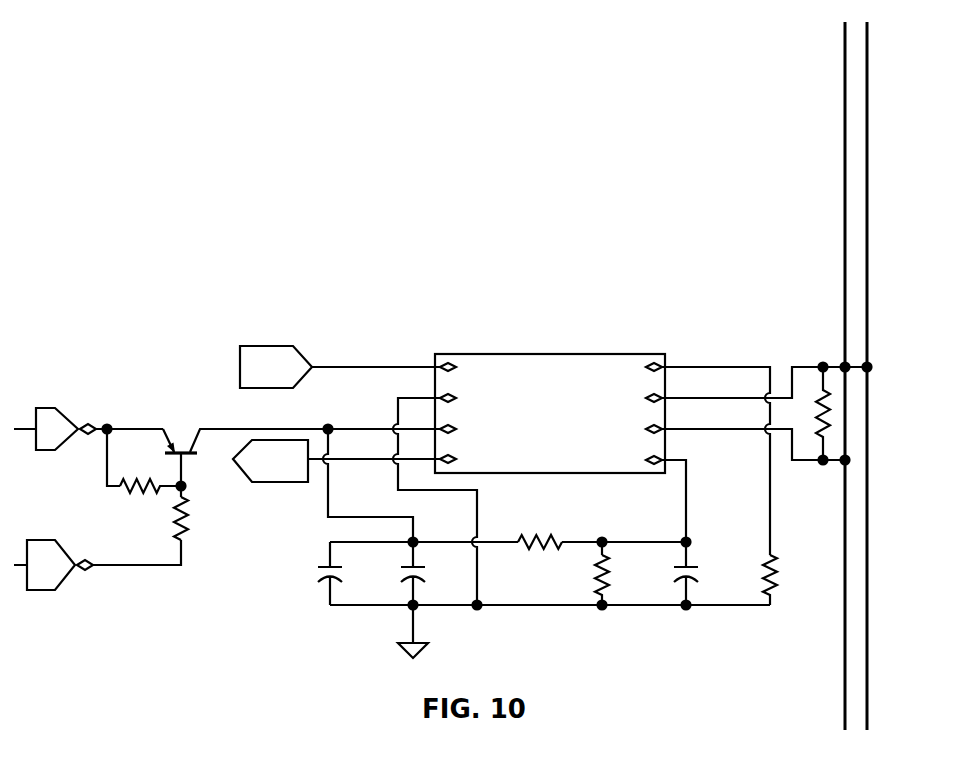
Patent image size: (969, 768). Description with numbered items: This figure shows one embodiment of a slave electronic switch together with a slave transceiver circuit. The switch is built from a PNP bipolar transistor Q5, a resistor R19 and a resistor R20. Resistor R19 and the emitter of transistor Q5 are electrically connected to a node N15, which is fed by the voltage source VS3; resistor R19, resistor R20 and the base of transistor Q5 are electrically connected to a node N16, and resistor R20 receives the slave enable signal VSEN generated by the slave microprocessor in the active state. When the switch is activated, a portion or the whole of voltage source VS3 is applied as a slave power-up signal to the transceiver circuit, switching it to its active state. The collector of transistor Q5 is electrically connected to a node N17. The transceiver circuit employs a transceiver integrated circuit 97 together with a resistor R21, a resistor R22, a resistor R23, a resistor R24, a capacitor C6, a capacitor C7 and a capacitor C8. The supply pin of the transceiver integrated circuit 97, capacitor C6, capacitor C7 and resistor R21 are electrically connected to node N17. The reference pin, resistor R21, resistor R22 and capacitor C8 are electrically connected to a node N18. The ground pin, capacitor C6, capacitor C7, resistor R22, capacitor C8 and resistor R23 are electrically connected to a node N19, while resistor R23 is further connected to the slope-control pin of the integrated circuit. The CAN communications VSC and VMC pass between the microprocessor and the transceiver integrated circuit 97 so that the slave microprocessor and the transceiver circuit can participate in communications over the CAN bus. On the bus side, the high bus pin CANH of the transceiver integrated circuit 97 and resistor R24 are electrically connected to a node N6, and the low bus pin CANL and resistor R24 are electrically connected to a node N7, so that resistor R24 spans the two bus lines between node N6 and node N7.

The transceiver integrated circuit 97 is at (560, 431).
The PNP bipolar transistor Q5 is at (245, 454).
The resistor R19 is at (150, 478).
The resistor R20 is at (198, 518).
The resistor R21 is at (540, 535).
The resistor R22 is at (618, 582).
The resistor R23 is at (787, 580).
The resistor R24 is at (806, 413).
The capacitor C6 is at (317, 573).
The capacitor C7 is at (401, 600).
The capacitor C8 is at (701, 574).
The node N15 is at (113, 446).
The node N16 is at (198, 488).
The node N17 is at (382, 477).
The node N18 is at (605, 538).
The node N19 is at (478, 616).
The node N6 is at (833, 360).
The node N7 is at (826, 469).
The CANL pin CANL is at (835, 326).
The CANH pin CANH is at (874, 326).
The voltage source VS3 is at (88, 429).
The slave enable signal VSEN is at (97, 565).
The CAN communication VSC is at (340, 367).
The CAN communication VMC is at (336, 461).